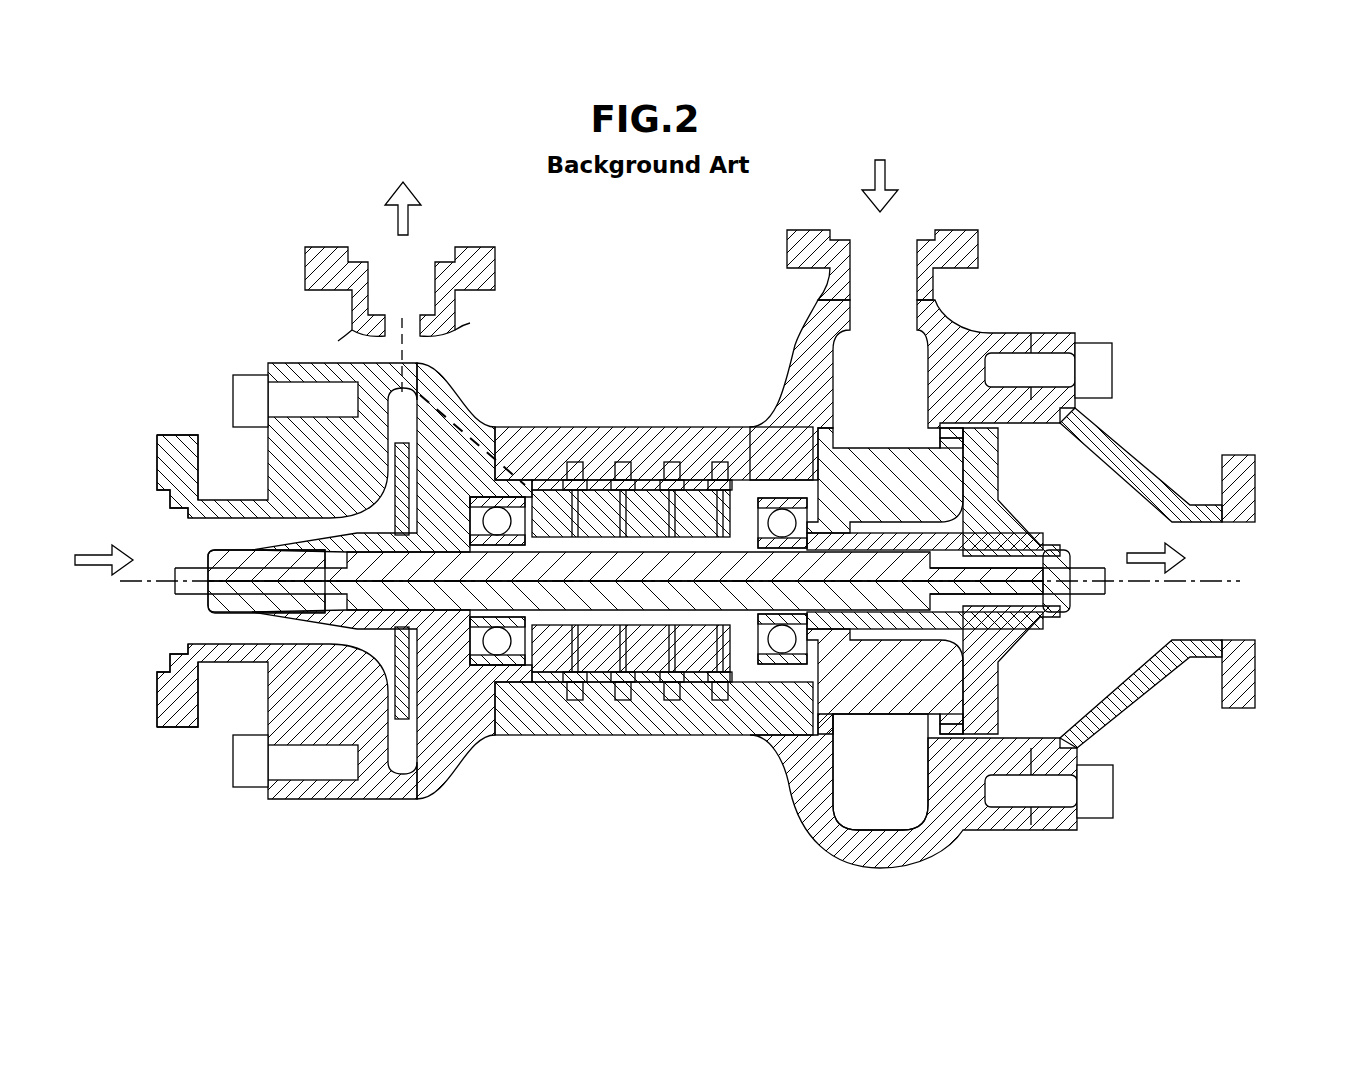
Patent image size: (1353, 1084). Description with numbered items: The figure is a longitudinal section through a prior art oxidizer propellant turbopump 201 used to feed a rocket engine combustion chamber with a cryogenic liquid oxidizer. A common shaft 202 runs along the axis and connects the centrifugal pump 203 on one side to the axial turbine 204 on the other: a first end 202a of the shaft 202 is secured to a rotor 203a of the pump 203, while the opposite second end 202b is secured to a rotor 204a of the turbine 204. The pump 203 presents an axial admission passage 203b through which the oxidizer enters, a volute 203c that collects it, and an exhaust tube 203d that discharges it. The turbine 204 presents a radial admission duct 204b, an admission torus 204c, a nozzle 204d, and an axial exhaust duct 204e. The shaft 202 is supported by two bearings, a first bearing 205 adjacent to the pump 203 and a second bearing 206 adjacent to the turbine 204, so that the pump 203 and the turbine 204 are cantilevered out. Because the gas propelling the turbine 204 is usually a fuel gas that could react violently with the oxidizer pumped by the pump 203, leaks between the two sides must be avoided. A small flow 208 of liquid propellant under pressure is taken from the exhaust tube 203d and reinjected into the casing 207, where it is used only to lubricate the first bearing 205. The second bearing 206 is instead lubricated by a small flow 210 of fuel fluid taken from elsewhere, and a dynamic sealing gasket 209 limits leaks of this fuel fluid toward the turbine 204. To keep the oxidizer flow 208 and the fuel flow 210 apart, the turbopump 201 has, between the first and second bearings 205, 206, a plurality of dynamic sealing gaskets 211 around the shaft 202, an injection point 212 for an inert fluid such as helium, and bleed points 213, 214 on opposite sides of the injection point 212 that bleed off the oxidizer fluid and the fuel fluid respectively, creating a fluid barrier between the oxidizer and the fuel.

The oxidizer propellant turbopump 201 is at (195, 787).
The common shaft 202 is at (640, 616).
The first end of the shaft 202a is at (445, 660).
The second end of the shaft 202b is at (1000, 635).
The centrifugal pump 203 is at (306, 525).
The rotor of the pump 203a is at (432, 447).
The axial admission passage 203b is at (185, 540).
The volute 203c is at (400, 752).
The exhaust tube 203d is at (420, 285).
The axial turbine 204 is at (1040, 539).
The rotor of the turbine 204a is at (997, 437).
The radial admission duct 204b is at (893, 265).
The admission torus 204c is at (895, 825).
The nozzle 204d is at (935, 440).
The axial exhaust duct 204e is at (1218, 548).
The first bearing 205 is at (507, 740).
The second bearing 206 is at (780, 640).
The casing 207 is at (545, 462).
The flow of liquid propellant 208 is at (410, 375).
The dynamic sealing gasket 209 is at (897, 632).
The flow of fuel fluid 210 is at (720, 468).
The dynamic sealing gaskets 211 is at (650, 558).
The injection point 212 is at (623, 468).
The bleed point 213 is at (578, 468).
The bleed point 214 is at (672, 468).